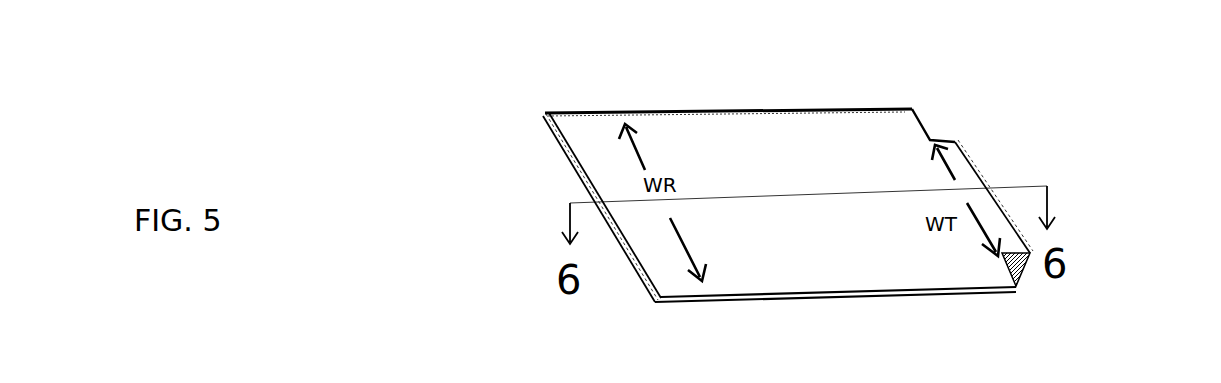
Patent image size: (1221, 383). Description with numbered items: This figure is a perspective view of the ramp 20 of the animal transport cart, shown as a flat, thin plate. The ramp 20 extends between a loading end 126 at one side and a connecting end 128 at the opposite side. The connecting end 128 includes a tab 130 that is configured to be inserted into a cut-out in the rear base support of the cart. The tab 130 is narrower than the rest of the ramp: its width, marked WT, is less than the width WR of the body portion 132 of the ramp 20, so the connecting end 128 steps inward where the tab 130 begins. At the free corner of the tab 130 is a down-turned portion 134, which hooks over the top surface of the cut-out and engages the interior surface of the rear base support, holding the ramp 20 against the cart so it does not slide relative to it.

The ramp 20 is at (833, 165).
The loading end 126 is at (553, 140).
The connecting end 128 is at (923, 125).
The tab 130 is at (958, 163).
The body portion 132 is at (882, 135).
The down-turned portion 134 is at (1025, 273).